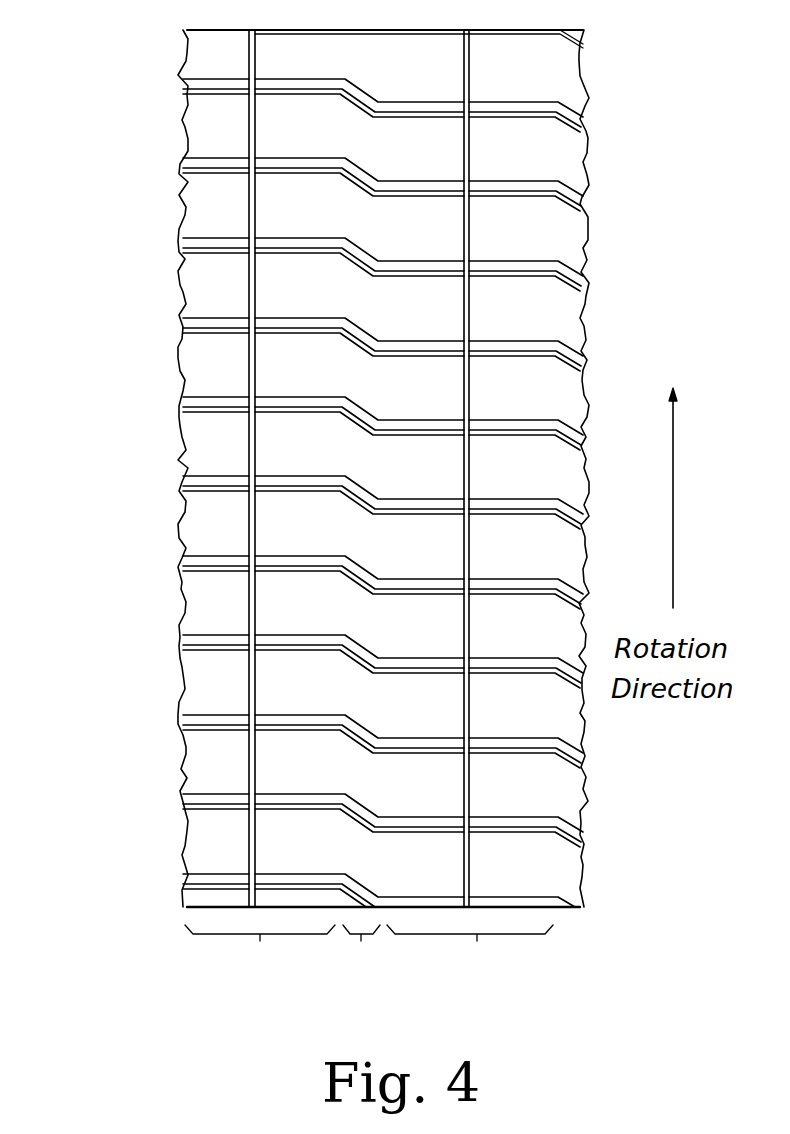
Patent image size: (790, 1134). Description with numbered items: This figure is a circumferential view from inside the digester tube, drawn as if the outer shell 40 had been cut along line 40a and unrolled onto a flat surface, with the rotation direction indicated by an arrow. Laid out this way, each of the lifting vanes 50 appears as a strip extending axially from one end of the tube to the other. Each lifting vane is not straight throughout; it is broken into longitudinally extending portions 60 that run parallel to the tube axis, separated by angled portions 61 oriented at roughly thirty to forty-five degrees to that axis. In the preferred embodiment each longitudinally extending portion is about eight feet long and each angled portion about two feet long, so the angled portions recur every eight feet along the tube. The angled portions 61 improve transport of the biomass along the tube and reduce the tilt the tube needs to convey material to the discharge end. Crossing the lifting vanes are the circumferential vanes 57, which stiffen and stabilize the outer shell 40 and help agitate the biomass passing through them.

The outer shell 40 is at (196, 67).
The cut line 40a is at (583, 31).
The lifting vanes 50 is at (322, 484).
The circumferential vanes 57 is at (255, 115).
The longitudinally extending portions 60 is at (369, 949).
The angled portions 61 is at (361, 949).